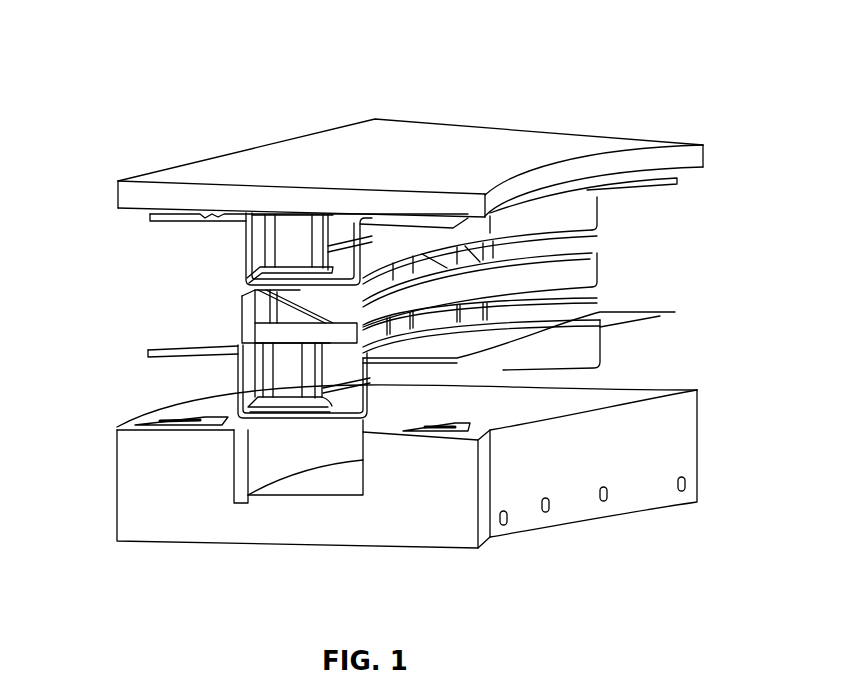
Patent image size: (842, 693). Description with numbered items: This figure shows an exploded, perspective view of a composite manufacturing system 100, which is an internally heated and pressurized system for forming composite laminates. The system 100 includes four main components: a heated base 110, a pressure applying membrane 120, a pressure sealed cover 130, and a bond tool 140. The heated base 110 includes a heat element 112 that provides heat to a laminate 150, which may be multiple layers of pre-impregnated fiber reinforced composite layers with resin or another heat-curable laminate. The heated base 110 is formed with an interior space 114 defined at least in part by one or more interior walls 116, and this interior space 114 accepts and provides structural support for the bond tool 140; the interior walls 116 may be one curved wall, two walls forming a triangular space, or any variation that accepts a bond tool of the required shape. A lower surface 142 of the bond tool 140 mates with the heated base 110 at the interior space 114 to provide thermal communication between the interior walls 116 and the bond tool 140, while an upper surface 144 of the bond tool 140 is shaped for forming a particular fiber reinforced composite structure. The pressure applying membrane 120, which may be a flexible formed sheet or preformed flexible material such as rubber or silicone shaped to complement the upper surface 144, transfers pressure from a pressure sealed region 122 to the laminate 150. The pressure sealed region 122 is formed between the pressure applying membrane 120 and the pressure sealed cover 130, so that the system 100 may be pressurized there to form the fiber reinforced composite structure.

The composite manufacturing system 100 is at (134, 88).
The heated base 110 is at (157, 503).
The heat element 112 is at (426, 528).
The interior space 114 is at (321, 497).
The interior wall 116 is at (267, 455).
The pressure applying membrane 120 is at (245, 250).
The pressure sealed region 122 is at (346, 215).
The pressure sealed cover 130 is at (484, 166).
The bond tool 140 is at (148, 350).
The lower surface 142 is at (503, 361).
The upper surface 144 is at (337, 420).
The laminate 150 is at (243, 300).